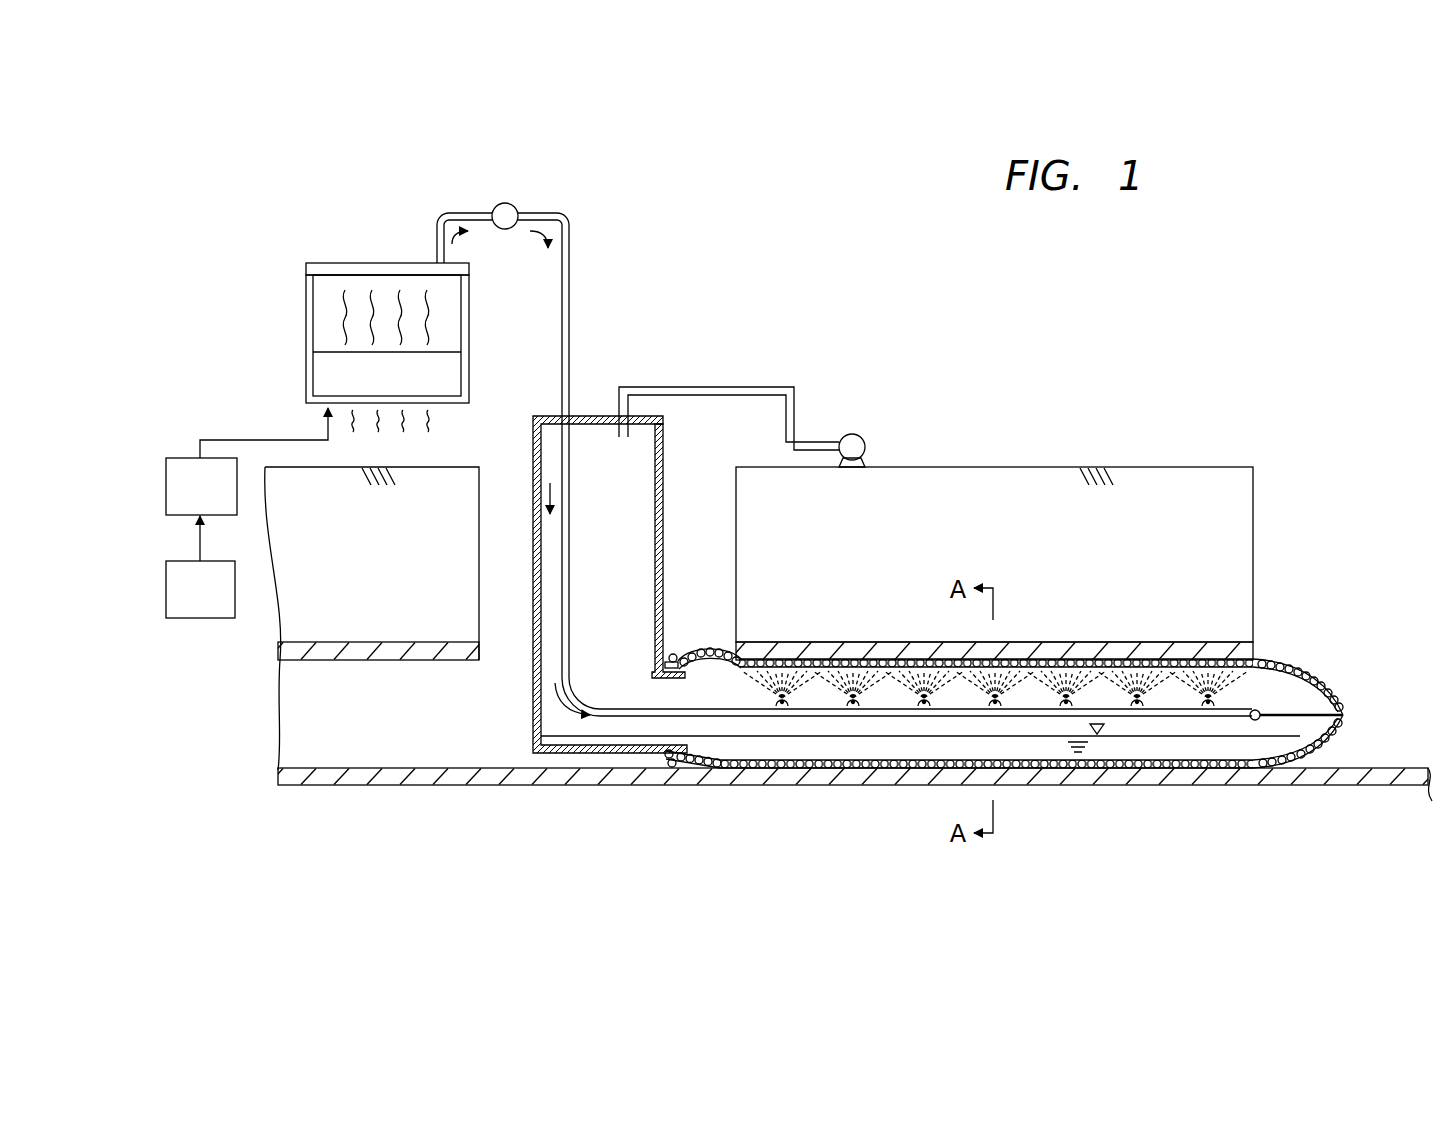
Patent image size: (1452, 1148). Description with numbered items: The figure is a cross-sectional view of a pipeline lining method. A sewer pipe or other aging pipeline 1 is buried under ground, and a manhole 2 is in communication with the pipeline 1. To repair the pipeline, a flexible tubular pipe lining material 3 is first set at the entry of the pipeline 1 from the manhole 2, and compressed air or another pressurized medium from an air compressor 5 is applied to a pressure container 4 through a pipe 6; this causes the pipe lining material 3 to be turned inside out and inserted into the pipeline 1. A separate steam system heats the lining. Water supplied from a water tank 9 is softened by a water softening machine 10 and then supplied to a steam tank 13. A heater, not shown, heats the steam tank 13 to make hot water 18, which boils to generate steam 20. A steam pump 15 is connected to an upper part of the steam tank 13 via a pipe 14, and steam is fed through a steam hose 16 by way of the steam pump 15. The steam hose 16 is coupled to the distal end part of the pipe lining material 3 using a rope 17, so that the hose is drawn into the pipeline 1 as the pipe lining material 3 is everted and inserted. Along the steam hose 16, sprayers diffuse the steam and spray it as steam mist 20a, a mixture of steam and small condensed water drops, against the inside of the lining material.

The pipeline 1 is at (1254, 658).
The manhole 2 is at (736, 535).
The pipe lining material 3 is at (1125, 752).
The pressure container 4 is at (590, 416).
The air compressor 5 is at (848, 434).
The pipe 6 is at (762, 387).
The water tank 9 is at (185, 619).
The water softening machine 10 is at (176, 457).
The steam tank 13 is at (322, 263).
The pipe 14 is at (458, 214).
The steam pump 15 is at (506, 203).
The steam hose 16 is at (829, 712).
The rope 17 is at (1285, 713).
The hot water 18 is at (335, 378).
The steam 20 is at (320, 312).
The steam mist 20a is at (1040, 683).